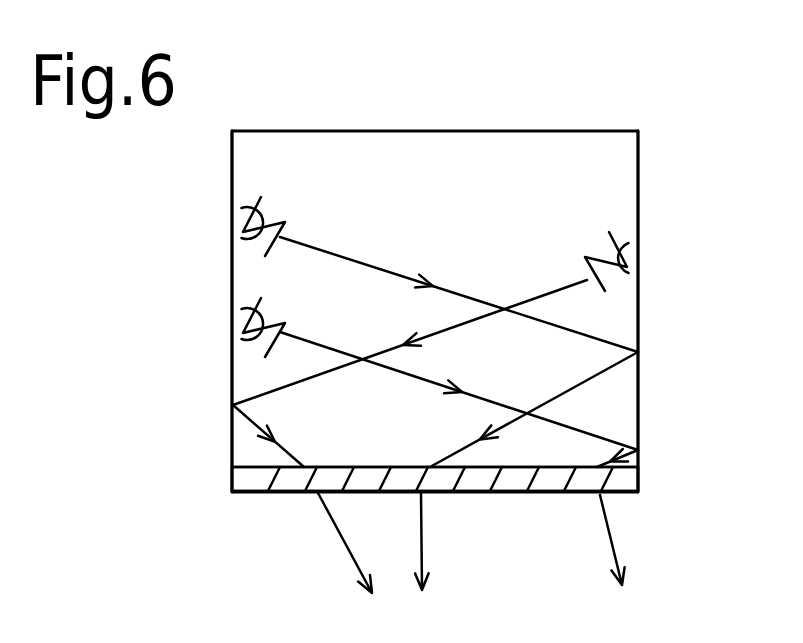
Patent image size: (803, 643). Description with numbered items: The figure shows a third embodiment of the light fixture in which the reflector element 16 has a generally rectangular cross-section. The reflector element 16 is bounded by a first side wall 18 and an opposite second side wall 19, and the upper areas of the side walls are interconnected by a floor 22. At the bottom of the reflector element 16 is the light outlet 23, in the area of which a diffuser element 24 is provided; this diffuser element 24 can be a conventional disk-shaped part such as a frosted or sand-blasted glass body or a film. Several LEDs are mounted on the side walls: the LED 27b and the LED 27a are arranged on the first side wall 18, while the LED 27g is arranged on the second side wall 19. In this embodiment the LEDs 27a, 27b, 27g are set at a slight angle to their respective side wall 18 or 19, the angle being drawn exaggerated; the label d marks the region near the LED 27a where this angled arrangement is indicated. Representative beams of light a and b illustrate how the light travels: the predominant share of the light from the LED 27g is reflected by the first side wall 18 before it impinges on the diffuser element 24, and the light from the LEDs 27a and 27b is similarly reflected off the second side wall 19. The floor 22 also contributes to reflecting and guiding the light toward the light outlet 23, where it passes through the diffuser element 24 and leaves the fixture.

The reflector element 16 is at (718, 128).
The first side wall 18 is at (232, 273).
The second side wall 19 is at (640, 313).
The floor 22 is at (318, 130).
The light outlet 23 is at (260, 470).
The diffuser element 24 is at (557, 487).
The LED 27a is at (237, 315).
The LED 27b is at (240, 212).
The LED 27g is at (628, 252).
The beam of light a is at (343, 255).
The beam of light b is at (553, 287).
The angle d is at (300, 343).